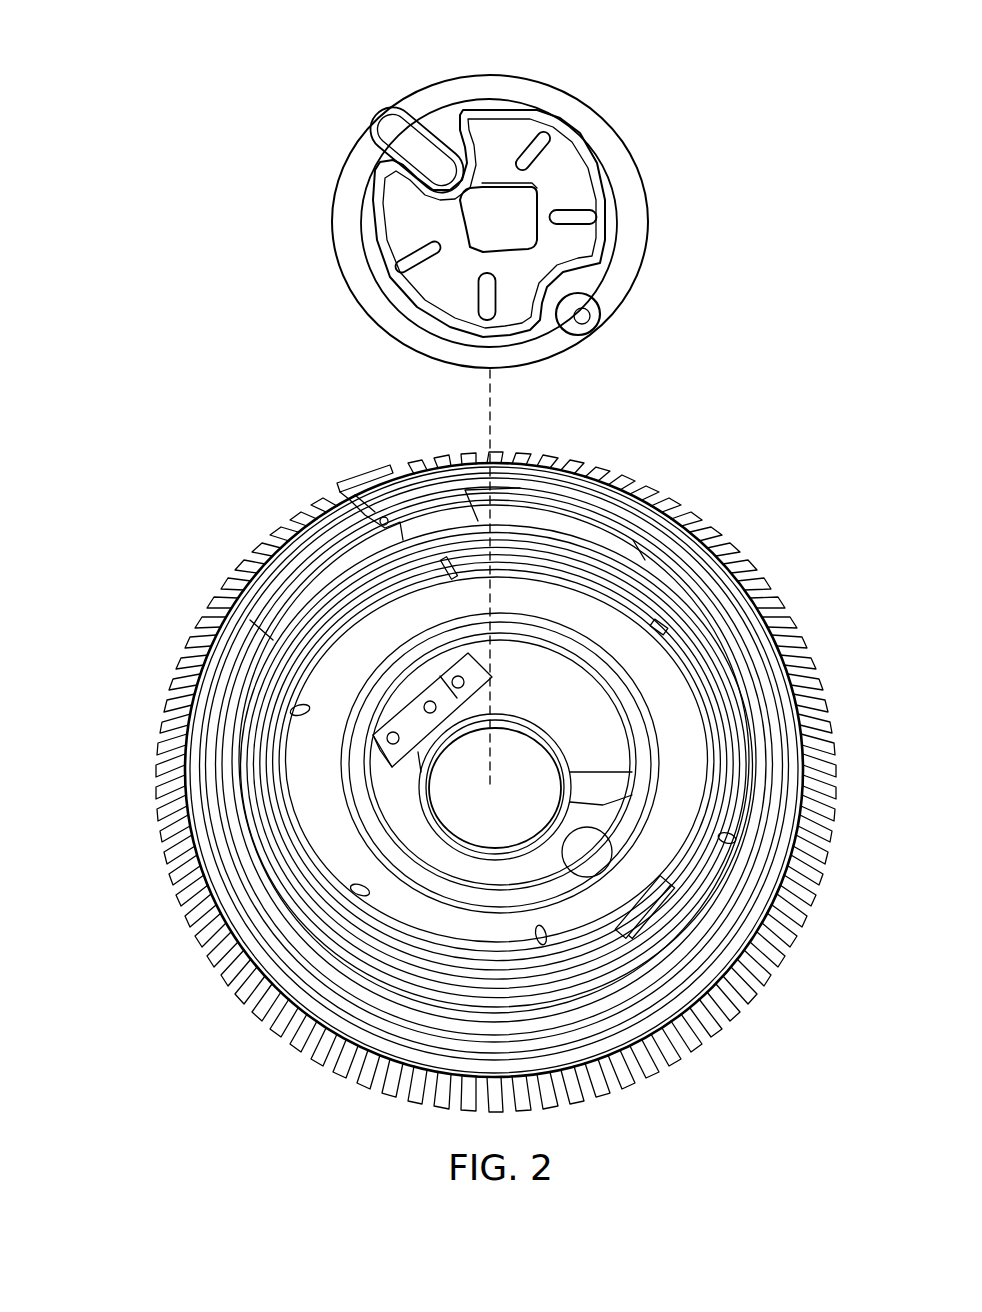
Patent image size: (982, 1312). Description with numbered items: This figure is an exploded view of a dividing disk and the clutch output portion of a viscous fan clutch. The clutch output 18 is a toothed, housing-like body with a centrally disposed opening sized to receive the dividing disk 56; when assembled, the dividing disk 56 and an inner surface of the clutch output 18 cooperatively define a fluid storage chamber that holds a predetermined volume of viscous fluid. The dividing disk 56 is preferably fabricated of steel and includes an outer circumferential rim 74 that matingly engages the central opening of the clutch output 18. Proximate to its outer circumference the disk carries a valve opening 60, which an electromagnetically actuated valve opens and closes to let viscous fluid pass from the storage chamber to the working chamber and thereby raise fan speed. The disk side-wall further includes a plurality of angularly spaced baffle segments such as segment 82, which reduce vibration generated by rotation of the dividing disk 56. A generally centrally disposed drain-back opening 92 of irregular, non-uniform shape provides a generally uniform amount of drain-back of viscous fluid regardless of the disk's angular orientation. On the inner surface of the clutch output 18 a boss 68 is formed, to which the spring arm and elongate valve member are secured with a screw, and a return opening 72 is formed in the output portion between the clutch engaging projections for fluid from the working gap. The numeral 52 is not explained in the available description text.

The clutch output 18 is at (690, 587).
The spiral spring 52 is at (718, 640).
The dividing disk 56 is at (510, 184).
The valve opening 60 is at (588, 322).
The boss 68 is at (383, 716).
The return opening 72 is at (372, 520).
The outer circumferential rim 74 is at (627, 178).
The baffle segment 82 is at (531, 133).
The drain-back opening 92 is at (500, 185).